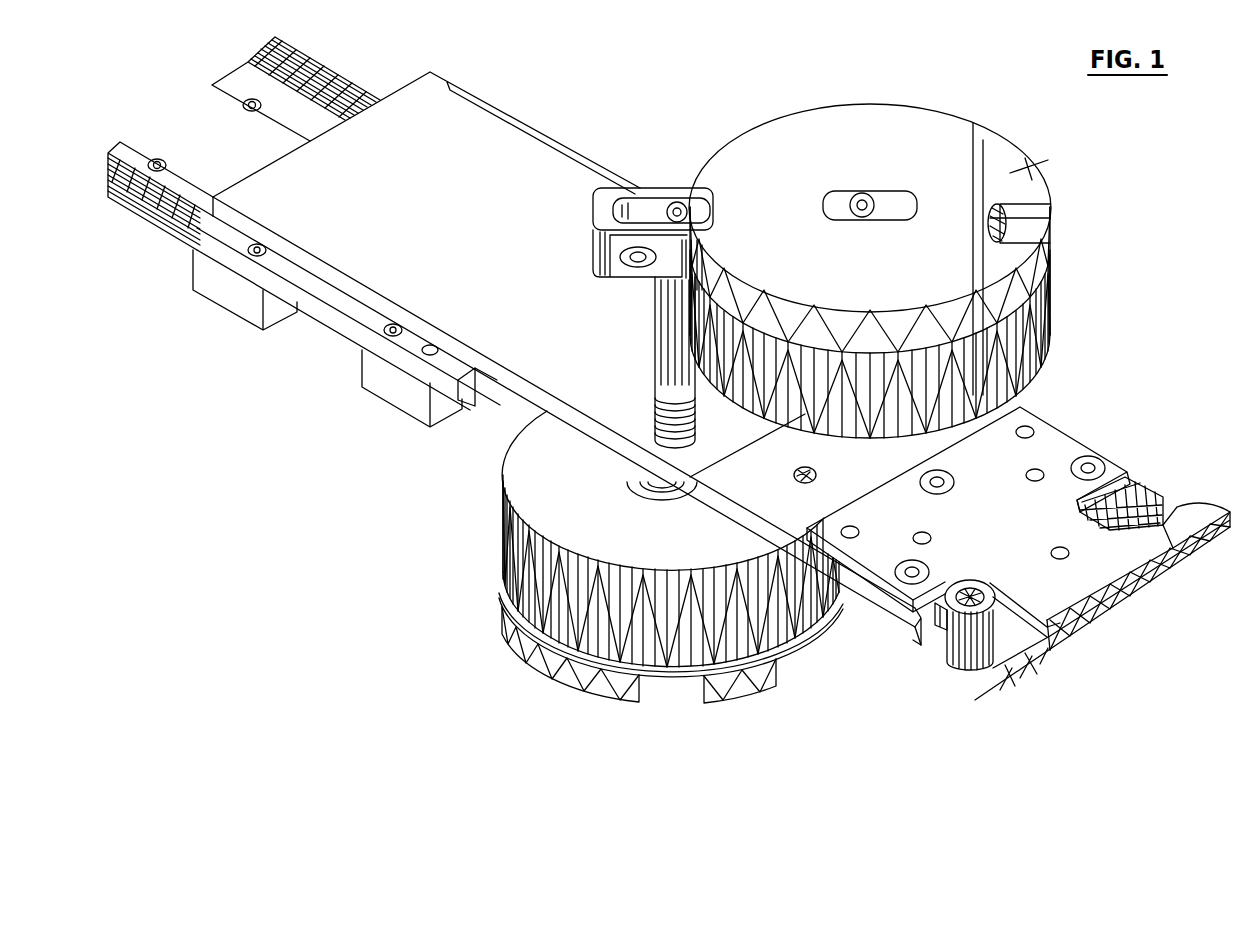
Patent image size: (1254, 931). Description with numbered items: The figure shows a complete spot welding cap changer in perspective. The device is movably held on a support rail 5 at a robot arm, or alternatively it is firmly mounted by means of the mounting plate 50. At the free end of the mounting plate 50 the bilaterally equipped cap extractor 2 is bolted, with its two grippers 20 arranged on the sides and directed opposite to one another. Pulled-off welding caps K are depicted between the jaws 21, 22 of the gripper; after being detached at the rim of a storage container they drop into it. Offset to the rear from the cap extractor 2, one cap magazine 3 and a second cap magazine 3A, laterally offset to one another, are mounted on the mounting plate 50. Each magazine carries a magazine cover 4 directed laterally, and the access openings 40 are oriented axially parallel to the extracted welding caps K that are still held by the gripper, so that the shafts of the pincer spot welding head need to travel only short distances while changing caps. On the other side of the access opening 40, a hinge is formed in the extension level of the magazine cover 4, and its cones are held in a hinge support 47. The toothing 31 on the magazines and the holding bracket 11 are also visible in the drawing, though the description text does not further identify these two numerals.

The cap extractor 2 is at (1066, 444).
The cap magazine 3 is at (874, 91).
The cap magazine 3A is at (749, 690).
The magazine cover 4 is at (482, 590).
The support rail 5 is at (190, 97).
The holding bracket 11 is at (683, 116).
The gripper 20 is at (1222, 486).
The jaw 21 is at (908, 632).
The jaw 22 is at (937, 650).
The toothing 31 is at (1032, 333).
The access opening 40 is at (990, 219).
The hinge support 47 is at (672, 200).
The mounting plate 50 is at (357, 292).
The welding cap K is at (1150, 492).